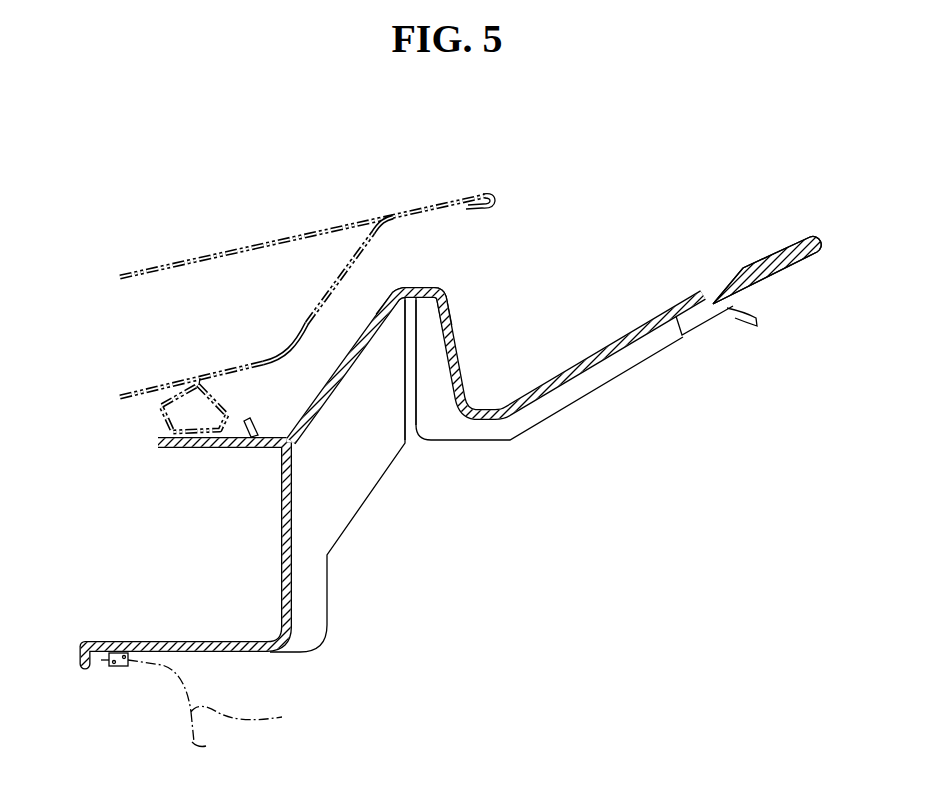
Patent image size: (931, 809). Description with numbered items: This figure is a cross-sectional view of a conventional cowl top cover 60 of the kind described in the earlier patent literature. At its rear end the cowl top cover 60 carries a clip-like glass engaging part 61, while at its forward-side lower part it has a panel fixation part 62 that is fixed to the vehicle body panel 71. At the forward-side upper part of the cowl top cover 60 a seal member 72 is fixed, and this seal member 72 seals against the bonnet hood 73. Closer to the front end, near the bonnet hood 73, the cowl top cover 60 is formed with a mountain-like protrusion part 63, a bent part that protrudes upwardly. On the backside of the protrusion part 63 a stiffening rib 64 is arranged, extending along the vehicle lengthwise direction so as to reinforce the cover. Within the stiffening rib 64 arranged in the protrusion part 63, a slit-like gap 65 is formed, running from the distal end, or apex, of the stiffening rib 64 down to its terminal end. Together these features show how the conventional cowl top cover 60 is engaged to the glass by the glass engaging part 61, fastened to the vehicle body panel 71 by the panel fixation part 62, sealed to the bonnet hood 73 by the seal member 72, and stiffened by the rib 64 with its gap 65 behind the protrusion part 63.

The cowl top cover 60 is at (652, 306).
The clip-like glass engaging part 61 is at (744, 266).
The panel fixation part 62 is at (119, 653).
The mountain-like protrusion part 63 is at (447, 297).
The stiffening rib 64 is at (458, 418).
The slit-like gap 65 is at (416, 445).
The vehicle body panel 71 is at (217, 703).
The seal member 72 is at (160, 422).
The bonnet hood 73 is at (207, 254).